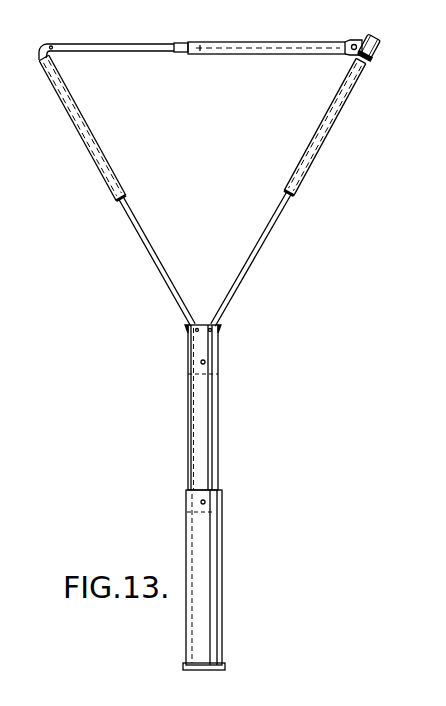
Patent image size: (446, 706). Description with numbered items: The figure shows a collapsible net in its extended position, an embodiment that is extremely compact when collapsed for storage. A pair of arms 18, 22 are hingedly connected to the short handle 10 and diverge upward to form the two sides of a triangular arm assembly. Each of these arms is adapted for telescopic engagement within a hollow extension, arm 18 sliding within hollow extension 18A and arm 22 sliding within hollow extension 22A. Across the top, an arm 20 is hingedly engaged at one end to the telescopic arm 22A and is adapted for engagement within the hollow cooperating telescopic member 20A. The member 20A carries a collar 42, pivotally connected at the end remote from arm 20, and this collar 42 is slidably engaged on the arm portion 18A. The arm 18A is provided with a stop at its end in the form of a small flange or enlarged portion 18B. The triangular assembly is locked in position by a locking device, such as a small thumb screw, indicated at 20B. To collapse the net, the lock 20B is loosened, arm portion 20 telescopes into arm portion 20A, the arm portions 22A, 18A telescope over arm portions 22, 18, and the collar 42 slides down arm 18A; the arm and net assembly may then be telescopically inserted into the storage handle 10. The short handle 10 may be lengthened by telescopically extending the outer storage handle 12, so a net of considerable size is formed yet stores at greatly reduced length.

The handle 10 is at (218, 383).
The outer storage handle 12 is at (221, 530).
The arm 18 is at (253, 268).
The hollow extension 18A is at (322, 140).
The enlarged portion 18B is at (378, 40).
The arm 20 is at (135, 45).
The telescopic member 20A is at (277, 42).
The locking device 20B is at (181, 44).
The arm 22 is at (148, 255).
The hollow extension 22A is at (92, 158).
The collar 42 is at (375, 58).